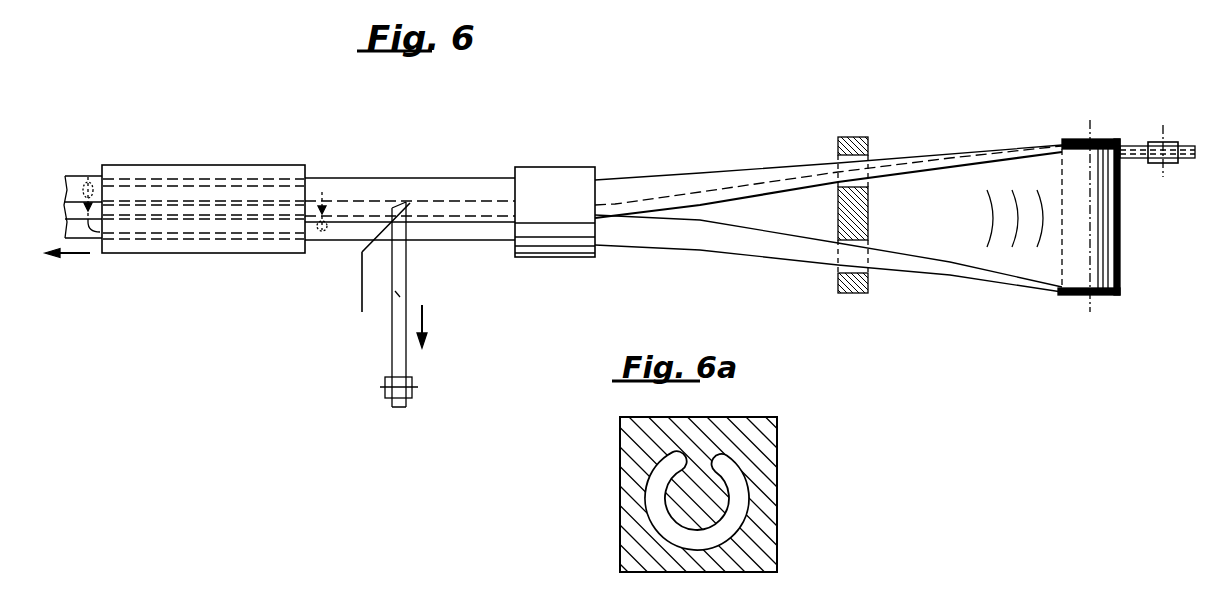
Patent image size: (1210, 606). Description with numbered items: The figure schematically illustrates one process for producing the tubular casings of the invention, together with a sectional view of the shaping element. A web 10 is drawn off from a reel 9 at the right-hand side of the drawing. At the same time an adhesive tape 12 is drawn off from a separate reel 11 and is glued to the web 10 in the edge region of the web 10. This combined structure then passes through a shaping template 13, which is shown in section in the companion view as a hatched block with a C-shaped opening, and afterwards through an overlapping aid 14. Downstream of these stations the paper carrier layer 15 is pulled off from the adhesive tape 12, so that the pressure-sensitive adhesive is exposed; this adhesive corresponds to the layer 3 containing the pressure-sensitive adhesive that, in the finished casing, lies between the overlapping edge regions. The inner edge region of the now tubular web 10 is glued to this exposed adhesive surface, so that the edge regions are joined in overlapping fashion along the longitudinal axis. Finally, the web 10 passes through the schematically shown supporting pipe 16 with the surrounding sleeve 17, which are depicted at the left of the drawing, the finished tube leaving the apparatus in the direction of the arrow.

In FIG. 6, the layer containing the pressure-sensitive adhesive 3 is at (430, 210).
In FIG. 6, the reel 9 is at (1073, 299).
In FIG. 6, the web 10 is at (83, 174).
In FIG. 6, the reel 11 is at (1174, 168).
In FIG. 6, the adhesive tape 12 is at (1110, 145).
In FIG. 6, the shaping template 13 is at (849, 294).
In FIG. 6A, the shaping template 13 is at (758, 483).
In FIG. 6, the overlapping aid 14 is at (548, 185).
In FIG. 6, the paper carrier layer 15 is at (393, 346).
In FIG. 6, the supporting pipe 16 is at (322, 191).
In FIG. 6, the sleeve 17 is at (246, 171).